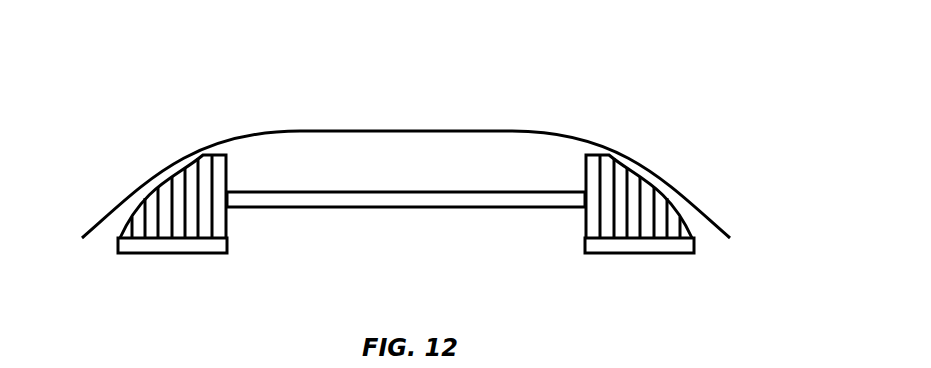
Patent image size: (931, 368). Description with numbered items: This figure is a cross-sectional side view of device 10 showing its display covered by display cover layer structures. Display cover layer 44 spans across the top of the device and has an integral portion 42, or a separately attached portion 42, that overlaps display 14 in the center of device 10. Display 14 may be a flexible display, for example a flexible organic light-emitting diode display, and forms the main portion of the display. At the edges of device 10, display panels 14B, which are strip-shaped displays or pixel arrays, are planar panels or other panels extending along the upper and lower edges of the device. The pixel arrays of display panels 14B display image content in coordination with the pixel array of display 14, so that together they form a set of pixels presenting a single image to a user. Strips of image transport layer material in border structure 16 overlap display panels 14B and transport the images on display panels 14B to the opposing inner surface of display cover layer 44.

The device 10 is at (406, 129).
The display 14 is at (385, 198).
The display panels 14B is at (173, 253).
The border structure 16 is at (235, 223).
The portion of display cover layer 42 is at (473, 180).
The display cover layer 44 is at (360, 128).